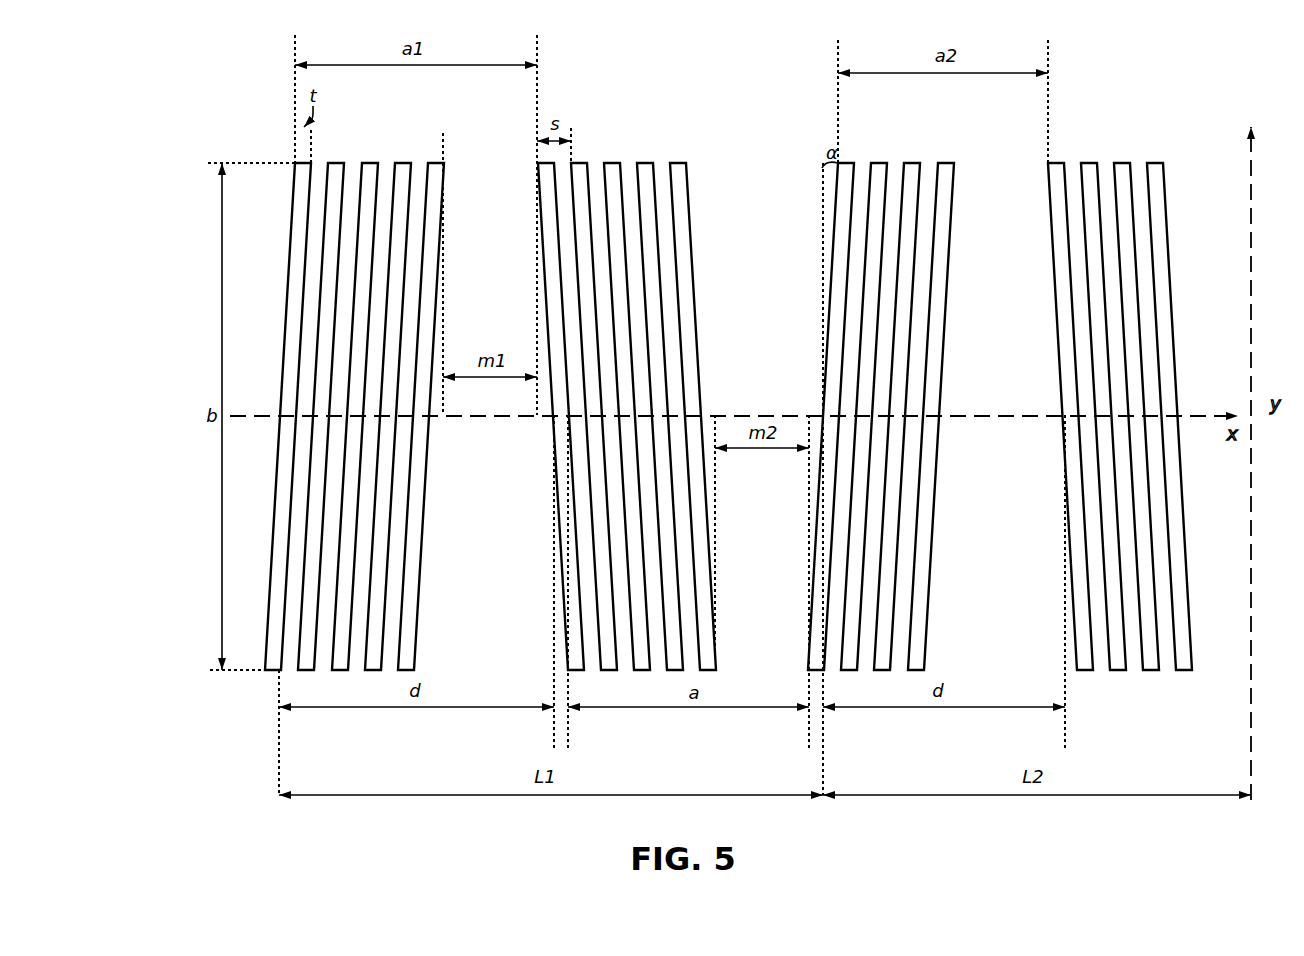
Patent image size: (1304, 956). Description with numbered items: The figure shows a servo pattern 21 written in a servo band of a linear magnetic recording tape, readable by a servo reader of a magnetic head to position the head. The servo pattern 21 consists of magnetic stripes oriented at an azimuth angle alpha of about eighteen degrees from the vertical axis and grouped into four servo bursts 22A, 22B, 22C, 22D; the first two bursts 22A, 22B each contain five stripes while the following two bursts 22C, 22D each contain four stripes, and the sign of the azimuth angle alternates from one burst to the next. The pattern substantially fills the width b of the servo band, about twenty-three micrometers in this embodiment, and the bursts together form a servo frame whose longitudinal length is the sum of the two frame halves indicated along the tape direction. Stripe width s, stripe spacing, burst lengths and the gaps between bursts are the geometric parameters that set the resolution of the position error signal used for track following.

The servo pattern 21 is at (198, 163).
The first servo burst 22A is at (357, 585).
The second servo burst 22B is at (620, 543).
The third servo burst 22C is at (872, 577).
The fourth servo burst 22D is at (1123, 520).